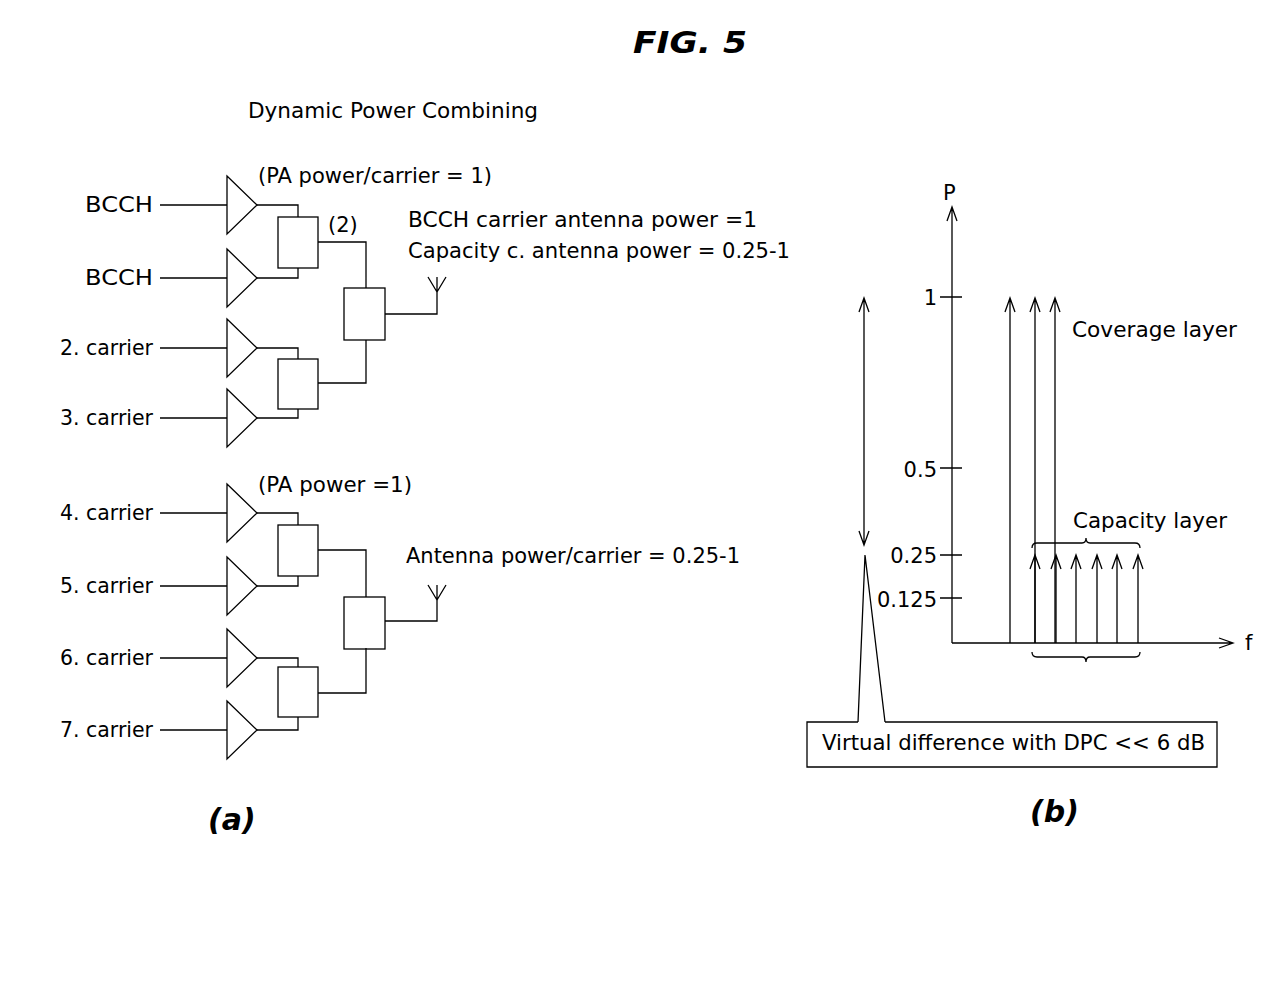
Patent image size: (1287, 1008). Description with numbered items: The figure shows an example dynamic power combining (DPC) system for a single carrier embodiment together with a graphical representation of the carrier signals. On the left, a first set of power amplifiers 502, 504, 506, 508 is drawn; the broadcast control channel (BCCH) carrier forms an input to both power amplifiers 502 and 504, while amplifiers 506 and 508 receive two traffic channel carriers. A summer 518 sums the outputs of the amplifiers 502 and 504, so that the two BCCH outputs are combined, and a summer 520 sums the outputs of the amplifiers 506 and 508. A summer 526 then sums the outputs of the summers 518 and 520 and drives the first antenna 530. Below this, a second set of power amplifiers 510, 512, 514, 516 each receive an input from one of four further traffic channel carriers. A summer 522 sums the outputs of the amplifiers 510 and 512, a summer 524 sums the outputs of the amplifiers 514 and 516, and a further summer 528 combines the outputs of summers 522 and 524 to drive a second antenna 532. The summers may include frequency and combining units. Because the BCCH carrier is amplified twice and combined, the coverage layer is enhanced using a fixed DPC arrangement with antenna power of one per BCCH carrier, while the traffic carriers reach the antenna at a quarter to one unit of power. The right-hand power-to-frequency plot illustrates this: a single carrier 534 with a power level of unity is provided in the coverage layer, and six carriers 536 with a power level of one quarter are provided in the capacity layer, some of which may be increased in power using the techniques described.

The power amplifier 502 is at (227, 178).
The power amplifier 504 is at (227, 251).
The power amplifier 506 is at (227, 321).
The power amplifier 508 is at (227, 391).
The power amplifier 510 is at (227, 486).
The power amplifier 512 is at (227, 559).
The power amplifier 514 is at (227, 631).
The power amplifier 516 is at (227, 703).
The summer 518 is at (307, 268).
The summer 520 is at (318, 398).
The summer 522 is at (318, 530).
The summer 524 is at (318, 706).
The summer 526 is at (385, 322).
The summer 528 is at (385, 630).
The first antenna 530 is at (447, 285).
The second antenna 532 is at (447, 593).
The single carrier having a power level of unity 534 is at (1017, 297).
The six carriers having a power level of 0.25 536 is at (1086, 615).